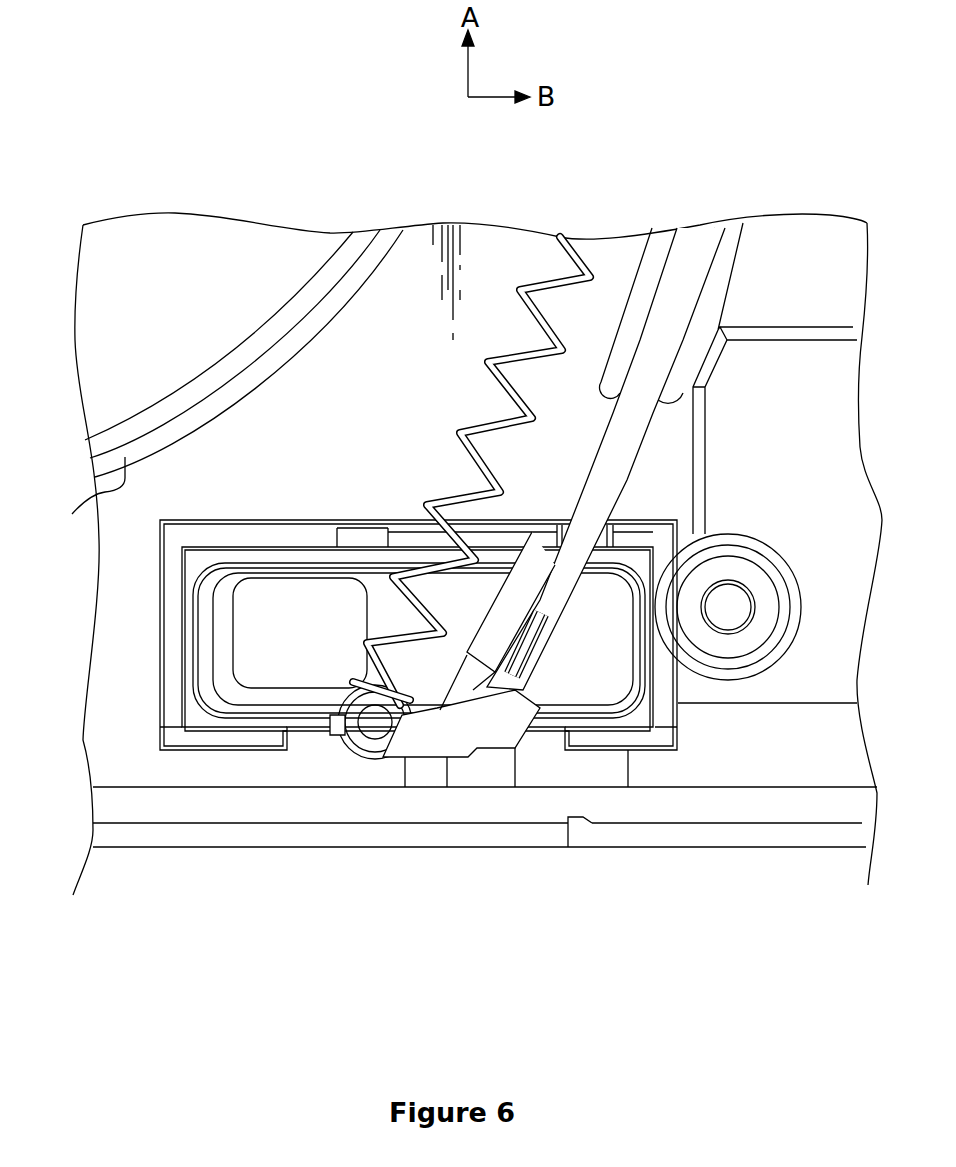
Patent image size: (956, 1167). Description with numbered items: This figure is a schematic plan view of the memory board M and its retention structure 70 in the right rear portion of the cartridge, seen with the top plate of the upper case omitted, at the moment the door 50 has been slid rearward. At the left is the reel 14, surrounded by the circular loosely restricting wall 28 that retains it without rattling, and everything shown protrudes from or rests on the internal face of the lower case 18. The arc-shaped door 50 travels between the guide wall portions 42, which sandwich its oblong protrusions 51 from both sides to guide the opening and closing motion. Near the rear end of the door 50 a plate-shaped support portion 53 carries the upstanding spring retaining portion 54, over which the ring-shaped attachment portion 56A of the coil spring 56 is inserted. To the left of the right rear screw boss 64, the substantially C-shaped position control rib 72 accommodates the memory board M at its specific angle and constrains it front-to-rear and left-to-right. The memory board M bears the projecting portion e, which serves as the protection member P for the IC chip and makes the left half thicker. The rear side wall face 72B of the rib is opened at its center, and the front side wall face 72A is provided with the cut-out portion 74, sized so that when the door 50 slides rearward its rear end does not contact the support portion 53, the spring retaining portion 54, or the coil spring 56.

The reel 14 is at (108, 362).
The loosely restricting wall 28 is at (81, 501).
The guide wall portion 42 is at (647, 267).
The door 50 is at (693, 240).
The protrusion 51 is at (541, 616).
The support portion 53 is at (493, 737).
The spring retaining portion 54 is at (375, 728).
The coil spring 56 is at (503, 387).
The attachment portion 56A is at (367, 737).
The screw boss 64 is at (760, 597).
The retaining structure 70 is at (334, 740).
The position control rib 72 is at (193, 741).
The case-front side wall face 72A is at (237, 537).
The case-rear side wall face 72B is at (243, 742).
The cut-out portion 74 is at (413, 533).
The projecting portion e is at (287, 612).
The protection member P is at (255, 647).
The memory board M is at (598, 654).
The lower case 18 is at (748, 846).